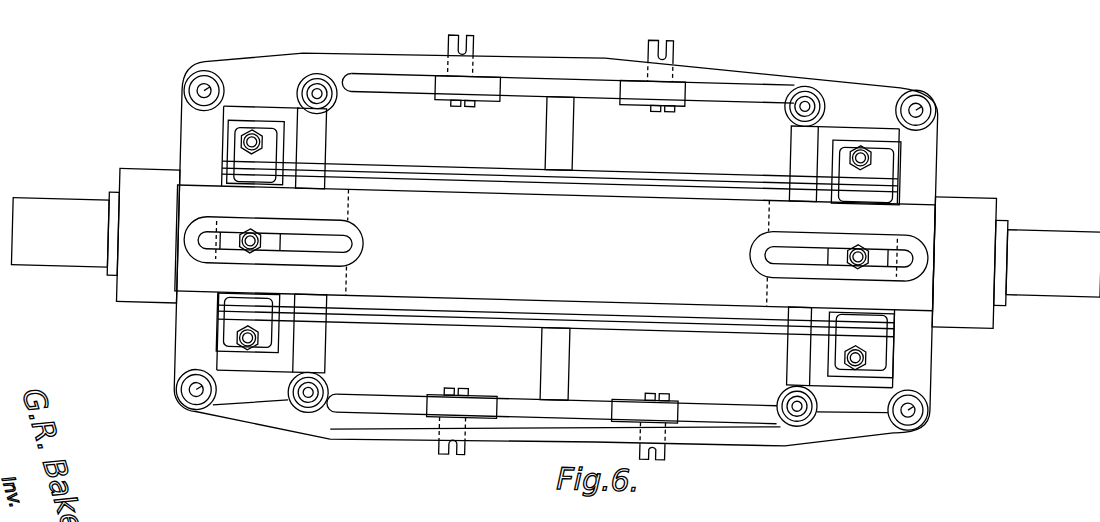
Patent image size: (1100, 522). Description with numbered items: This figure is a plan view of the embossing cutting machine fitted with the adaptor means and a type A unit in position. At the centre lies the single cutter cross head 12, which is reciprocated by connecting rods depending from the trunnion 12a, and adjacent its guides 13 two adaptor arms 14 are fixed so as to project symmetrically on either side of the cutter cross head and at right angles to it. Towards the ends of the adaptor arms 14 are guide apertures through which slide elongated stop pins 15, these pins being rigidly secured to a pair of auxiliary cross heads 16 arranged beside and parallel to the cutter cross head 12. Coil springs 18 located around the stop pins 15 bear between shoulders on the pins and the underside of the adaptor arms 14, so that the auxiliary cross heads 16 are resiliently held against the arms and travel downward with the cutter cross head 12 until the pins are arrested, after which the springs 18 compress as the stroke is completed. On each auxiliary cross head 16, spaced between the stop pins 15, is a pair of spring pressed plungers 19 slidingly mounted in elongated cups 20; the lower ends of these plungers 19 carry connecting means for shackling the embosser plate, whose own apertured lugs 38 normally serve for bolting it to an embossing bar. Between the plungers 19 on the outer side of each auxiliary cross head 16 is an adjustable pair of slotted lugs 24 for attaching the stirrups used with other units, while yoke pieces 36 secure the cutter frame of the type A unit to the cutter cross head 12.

The cutter cross head 12 is at (555, 249).
The trunnion 12a is at (1053, 263).
The guides 13 is at (95, 234).
The adaptor arms 14 is at (924, 145).
The stop pins 15 is at (184, 92).
The auxiliary cross heads 16 is at (555, 67).
The coil springs 18 is at (970, 263).
The spring pressed plungers 19 is at (314, 94).
The elongated cups 20 is at (334, 98).
The slotted lugs 24 is at (466, 42).
The yoke pieces 36 is at (231, 166).
The apertured lugs 38 is at (319, 141).